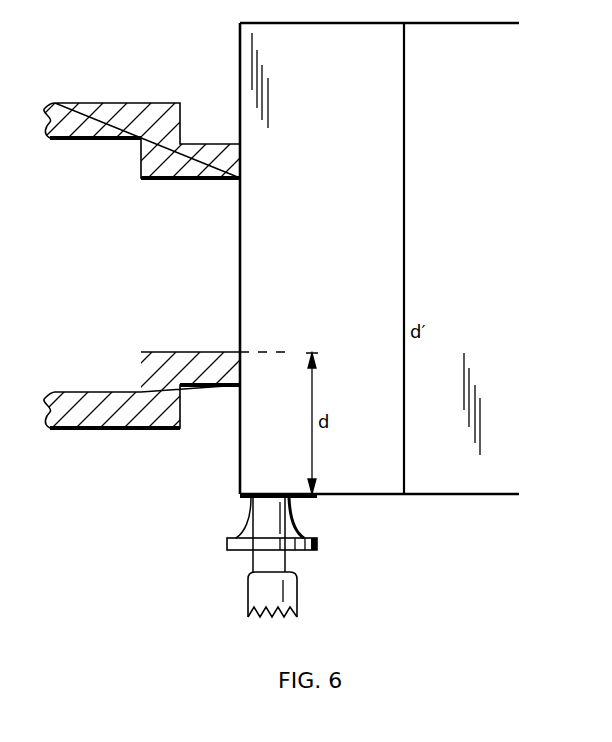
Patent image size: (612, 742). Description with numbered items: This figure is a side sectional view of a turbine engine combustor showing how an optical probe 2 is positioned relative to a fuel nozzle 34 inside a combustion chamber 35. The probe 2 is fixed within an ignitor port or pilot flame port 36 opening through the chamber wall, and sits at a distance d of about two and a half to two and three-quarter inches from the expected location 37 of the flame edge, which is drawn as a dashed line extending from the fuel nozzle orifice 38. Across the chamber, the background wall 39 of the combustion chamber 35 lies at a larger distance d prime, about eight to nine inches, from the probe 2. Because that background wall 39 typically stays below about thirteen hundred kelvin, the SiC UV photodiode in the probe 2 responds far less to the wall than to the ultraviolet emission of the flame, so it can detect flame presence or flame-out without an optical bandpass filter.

The probe 2 is at (297, 531).
The fuel nozzle 34 is at (227, 163).
The combustion chamber 35 is at (476, 244).
The pilot flame port 36 is at (258, 493).
The expected location of the flame edge 37 is at (287, 352).
The fuel nozzle orifice 38 is at (240, 236).
The background wall 39 is at (443, 23).